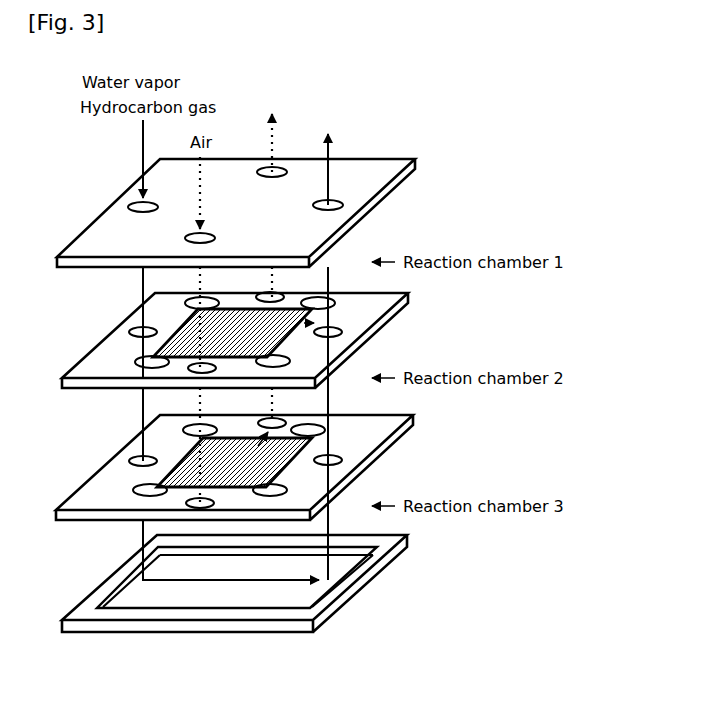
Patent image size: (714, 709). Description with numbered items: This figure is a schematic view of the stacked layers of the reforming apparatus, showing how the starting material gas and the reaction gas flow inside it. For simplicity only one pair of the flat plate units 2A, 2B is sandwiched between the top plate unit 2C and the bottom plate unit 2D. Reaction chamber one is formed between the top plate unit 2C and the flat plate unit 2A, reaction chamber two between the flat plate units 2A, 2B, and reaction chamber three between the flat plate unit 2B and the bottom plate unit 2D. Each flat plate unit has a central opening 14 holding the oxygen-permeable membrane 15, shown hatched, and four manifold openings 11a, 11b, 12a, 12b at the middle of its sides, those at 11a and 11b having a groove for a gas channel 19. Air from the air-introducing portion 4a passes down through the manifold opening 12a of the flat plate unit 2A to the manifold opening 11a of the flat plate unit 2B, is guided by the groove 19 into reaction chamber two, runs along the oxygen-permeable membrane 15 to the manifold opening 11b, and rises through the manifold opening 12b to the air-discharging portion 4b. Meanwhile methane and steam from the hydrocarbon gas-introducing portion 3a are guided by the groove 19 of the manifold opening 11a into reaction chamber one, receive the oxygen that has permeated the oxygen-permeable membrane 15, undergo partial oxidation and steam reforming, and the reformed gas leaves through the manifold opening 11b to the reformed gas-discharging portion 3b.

The top plate unit 2C is at (416, 163).
The flat plate unit 2A is at (409, 295).
The flat plate unit 2B is at (414, 418).
The bottom plate unit 2D is at (408, 537).
The hydrocarbon gas-introducing portion 3a is at (143, 143).
The reformed gas-discharging portion 3b is at (330, 146).
The air-introducing portion 4a is at (200, 189).
The air-discharging portion 4b is at (272, 150).
The manifold opening 11a is at (130, 332).
The manifold opening 11b is at (341, 334).
The manifold opening 12a is at (190, 370).
The manifold opening 12b is at (272, 296).
The opening 14 is at (162, 323).
The oxygen-permeable membrane 15 is at (165, 348).
The groove for a gas channel 19 is at (150, 492).